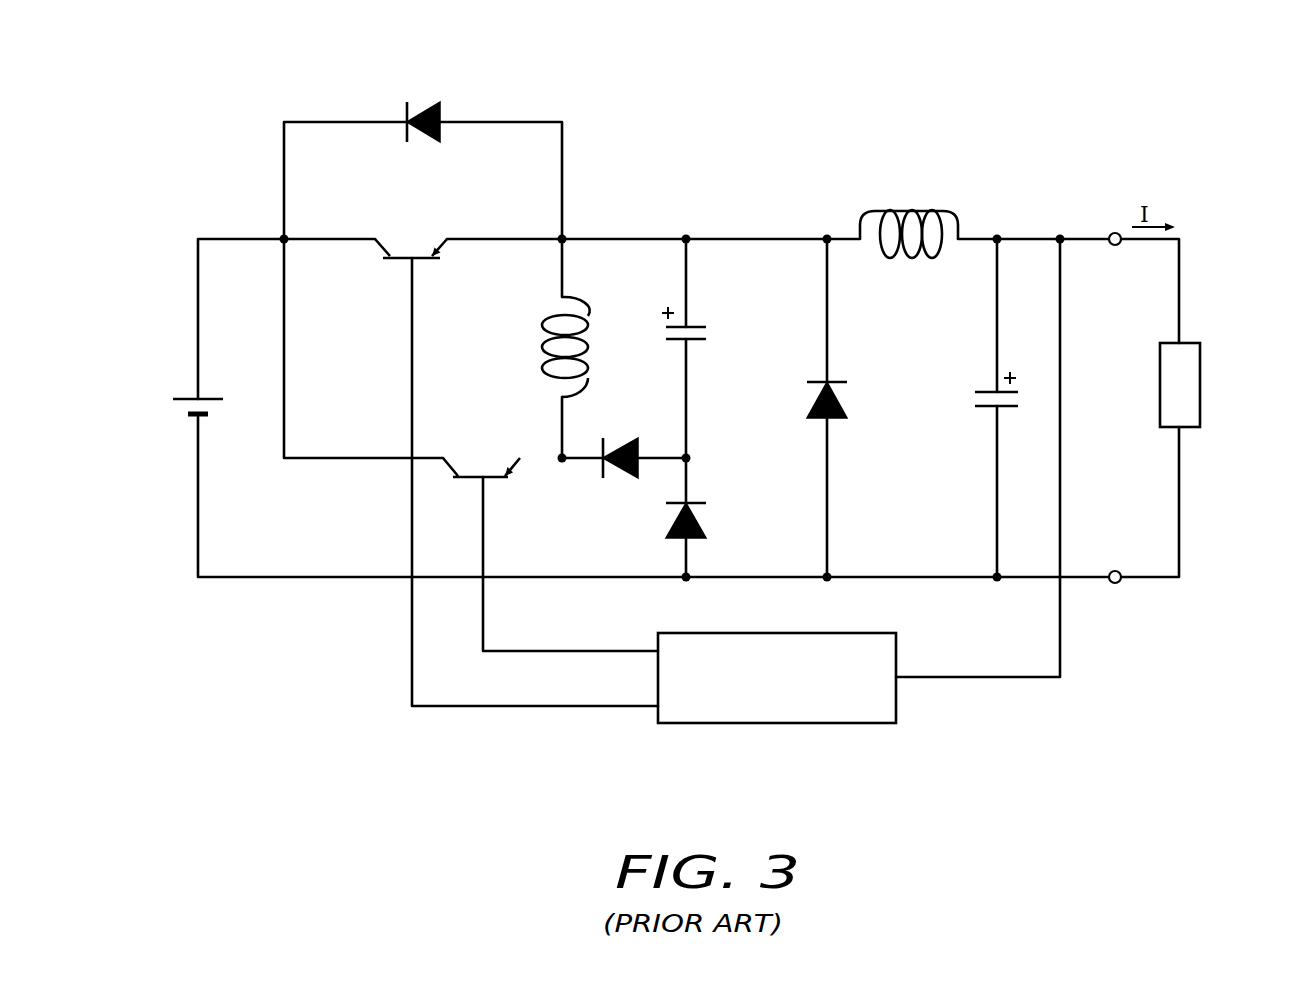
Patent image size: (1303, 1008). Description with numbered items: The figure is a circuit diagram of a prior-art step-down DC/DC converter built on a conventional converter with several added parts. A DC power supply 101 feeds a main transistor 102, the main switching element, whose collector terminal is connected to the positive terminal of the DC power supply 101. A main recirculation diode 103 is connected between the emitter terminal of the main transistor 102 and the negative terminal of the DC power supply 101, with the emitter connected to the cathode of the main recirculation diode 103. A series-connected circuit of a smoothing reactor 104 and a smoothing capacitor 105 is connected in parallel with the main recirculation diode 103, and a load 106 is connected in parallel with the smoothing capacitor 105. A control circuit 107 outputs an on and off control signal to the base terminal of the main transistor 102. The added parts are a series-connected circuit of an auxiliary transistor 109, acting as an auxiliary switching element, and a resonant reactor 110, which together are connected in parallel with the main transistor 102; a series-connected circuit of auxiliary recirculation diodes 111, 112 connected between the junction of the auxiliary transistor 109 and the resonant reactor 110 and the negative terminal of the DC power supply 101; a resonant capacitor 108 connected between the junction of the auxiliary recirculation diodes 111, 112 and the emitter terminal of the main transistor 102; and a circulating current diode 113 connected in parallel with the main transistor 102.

The DC power supply 101 is at (190, 416).
The main transistor 102 is at (412, 250).
The main recirculation diode 103 is at (818, 400).
The smoothing reactor 104 is at (920, 210).
The smoothing capacitor 105 is at (988, 390).
The load 106 is at (1200, 368).
The control circuit 107 is at (817, 723).
The resonant capacitor 108 is at (695, 322).
The auxiliary transistor 109 is at (487, 470).
The resonant reactor 110 is at (552, 318).
The auxiliary recirculation diode 111 is at (617, 478).
The auxiliary recirculation diode 112 is at (700, 522).
The circulating current diode 113 is at (428, 100).